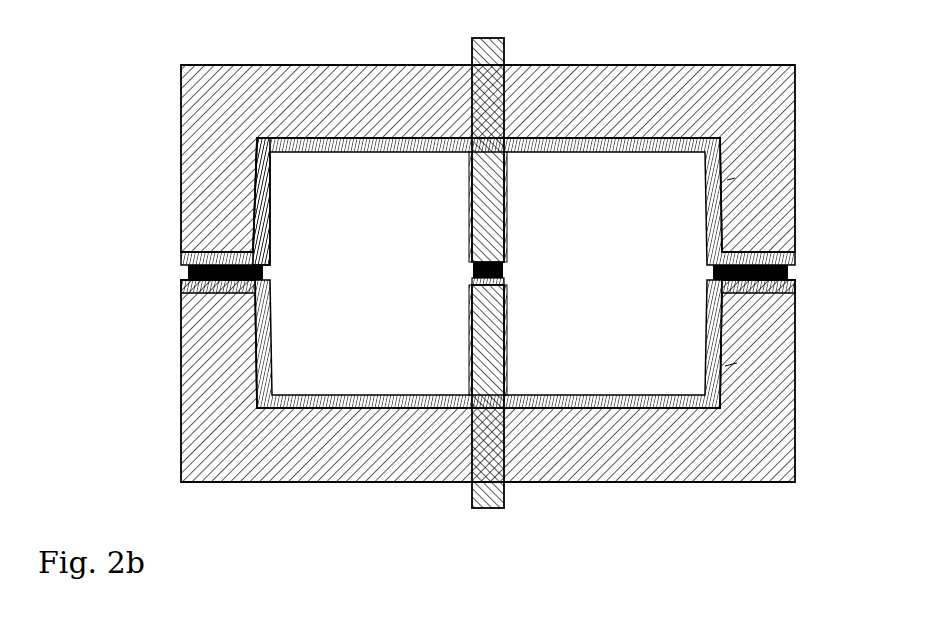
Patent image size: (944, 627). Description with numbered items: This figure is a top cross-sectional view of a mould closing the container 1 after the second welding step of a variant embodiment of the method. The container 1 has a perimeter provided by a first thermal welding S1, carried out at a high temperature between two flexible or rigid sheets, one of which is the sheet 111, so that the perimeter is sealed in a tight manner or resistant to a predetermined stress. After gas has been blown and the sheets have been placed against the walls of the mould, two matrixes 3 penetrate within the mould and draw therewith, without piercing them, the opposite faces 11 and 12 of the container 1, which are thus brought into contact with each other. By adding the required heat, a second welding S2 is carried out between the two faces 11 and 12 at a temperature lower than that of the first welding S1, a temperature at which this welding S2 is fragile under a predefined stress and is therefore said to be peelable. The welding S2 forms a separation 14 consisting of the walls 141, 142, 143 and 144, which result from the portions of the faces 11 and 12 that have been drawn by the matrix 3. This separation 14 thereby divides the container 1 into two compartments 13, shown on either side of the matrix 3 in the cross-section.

The container 1 is at (488, 273).
The face of the container 11 is at (488, 165).
The sheet 111 is at (270, 201).
The face of the container 12 is at (602, 404).
The compartments 13 is at (374, 336).
The separation 14 is at (510, 261).
The wall of the separation 141 is at (507, 209).
The wall of the separation 142 is at (469, 217).
The wall of the separation 143 is at (472, 300).
The wall of the separation 144 is at (507, 308).
The matrix 3 is at (521, 261).
The first welding S1 is at (182, 275).
The second welding S2 is at (505, 272).